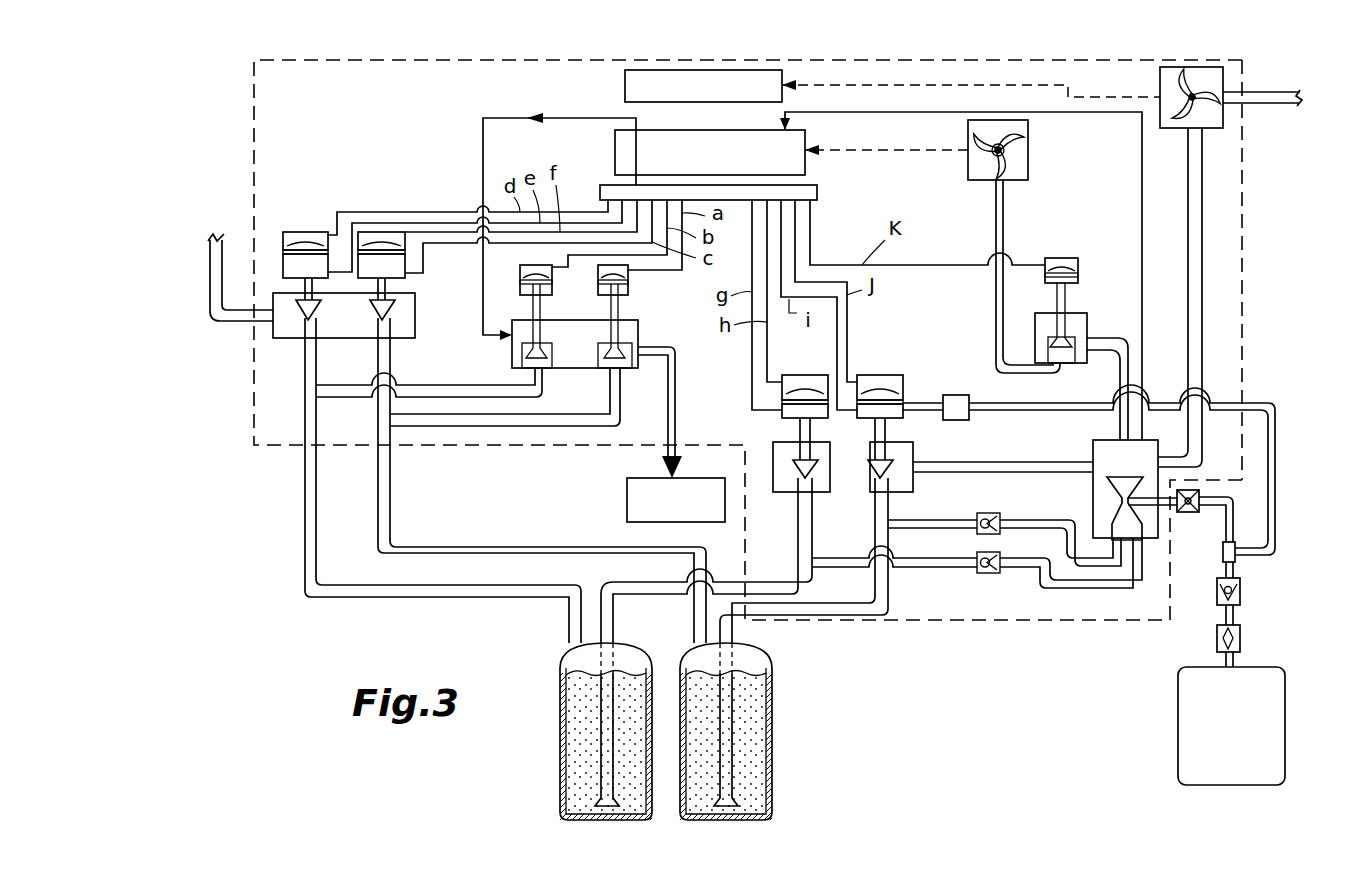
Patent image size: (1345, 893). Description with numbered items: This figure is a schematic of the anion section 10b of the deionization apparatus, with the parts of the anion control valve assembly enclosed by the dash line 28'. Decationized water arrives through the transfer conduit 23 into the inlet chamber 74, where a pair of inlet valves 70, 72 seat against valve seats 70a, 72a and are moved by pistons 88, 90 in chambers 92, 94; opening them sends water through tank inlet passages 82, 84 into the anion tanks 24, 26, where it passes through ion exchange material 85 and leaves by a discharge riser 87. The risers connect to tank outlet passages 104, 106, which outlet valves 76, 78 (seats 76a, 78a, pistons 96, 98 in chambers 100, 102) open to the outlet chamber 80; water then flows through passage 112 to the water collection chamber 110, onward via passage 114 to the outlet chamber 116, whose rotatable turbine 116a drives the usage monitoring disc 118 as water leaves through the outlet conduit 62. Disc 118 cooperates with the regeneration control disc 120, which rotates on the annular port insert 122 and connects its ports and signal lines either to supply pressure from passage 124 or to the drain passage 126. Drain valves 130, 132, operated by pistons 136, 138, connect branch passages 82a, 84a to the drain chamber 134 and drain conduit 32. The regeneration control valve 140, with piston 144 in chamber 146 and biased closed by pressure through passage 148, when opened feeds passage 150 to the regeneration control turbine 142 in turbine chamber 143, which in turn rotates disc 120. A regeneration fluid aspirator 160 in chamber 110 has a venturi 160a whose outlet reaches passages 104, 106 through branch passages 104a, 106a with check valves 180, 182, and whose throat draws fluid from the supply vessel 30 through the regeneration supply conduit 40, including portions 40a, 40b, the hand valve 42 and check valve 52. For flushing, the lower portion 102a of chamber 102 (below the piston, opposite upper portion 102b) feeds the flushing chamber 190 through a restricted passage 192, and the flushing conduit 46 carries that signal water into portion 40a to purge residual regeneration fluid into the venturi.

The anion control valve assembly boundary 28' is at (748, 340).
The anion section 10b is at (1256, 261).
The usage monitoring disc 118 is at (624, 86).
The regeneration control disc 120 is at (808, 158).
The annular port insert 122 is at (818, 189).
The water supply pressure passage 124 is at (867, 112).
The drain passage 126 is at (513, 117).
The regeneration control turbine 142 is at (1028, 148).
The turbine chamber 143 is at (1012, 166).
The outlet chamber 116 is at (1223, 118).
The rotatable turbine 116a is at (1222, 132).
The outlet conduit 62 is at (1290, 104).
The passage 114 is at (1206, 300).
The turbine supply passage 150 is at (1004, 220).
The single acting piston 144 is at (1078, 266).
The control valve chamber 146 is at (1062, 258).
The regeneration control valve 140 is at (1077, 313).
The passage 148 is at (1119, 374).
The transfer conduit 23 is at (236, 299).
The piston chamber 92 is at (283, 246).
The piston 88 is at (284, 233).
The piston 90 is at (376, 232).
The piston chamber 94 is at (424, 268).
The inlet chamber 74 is at (415, 326).
The inlet valve 70 is at (319, 304).
The inlet valve 72 is at (390, 300).
The valve seat 70a is at (320, 322).
The valve seat 72a is at (394, 322).
The tank inlet passage 82 is at (316, 515).
The tank inlet passage 84 is at (391, 498).
The branch passage 82a is at (440, 392).
The branch passage 84a is at (522, 426).
The piston 136 is at (546, 265).
The piston 138 is at (598, 274).
The drain valve 130 is at (541, 300).
The drain valve 132 is at (620, 310).
The drain chamber 134 is at (567, 368).
The drain conduit 32 is at (677, 392).
The piston chamber 100 is at (797, 375).
The piston 96 is at (801, 392).
The piston chamber 102 is at (862, 374).
The piston 98 is at (881, 392).
The upper portion of piston chamber 102b is at (893, 378).
The lower portion of piston chamber 102a is at (860, 419).
The restricted passage 192 is at (920, 401).
The flushing chamber 190 is at (968, 396).
The flushing conduit 46 is at (1276, 440).
The regeneration fluid aspirator 160 is at (1109, 462).
The venturi 160a is at (1127, 477).
The passage 112 is at (996, 462).
The outlet valve 76 is at (811, 463).
The valve seat 76a is at (816, 469).
The outlet valve 78 is at (896, 456).
The valve seat 78a is at (899, 476).
The outlet chamber 80 is at (814, 497).
The tank outlet passage 104 is at (797, 535).
The branch passage 104a is at (903, 568).
The check valve 180 is at (1000, 572).
The check valve 182 is at (1000, 531).
The branch passage 106a is at (1019, 519).
The water collection chamber 110 is at (1093, 488).
The tank outlet passage 106 is at (871, 621).
The anion tank 24 is at (560, 748).
The anion tank 26 is at (772, 748).
The ion exchange material 85 is at (562, 700).
The discharge riser 87 is at (608, 725).
The regeneration supply conduit portion 40a is at (1226, 528).
The regeneration supply conduit 40 is at (1258, 576).
The check valve 52 is at (1243, 592).
The regeneration supply conduit portion 40b is at (1240, 614).
The hand valve 42 is at (1241, 640).
The anion regeneration fluid supply vessel 30 is at (1218, 732).